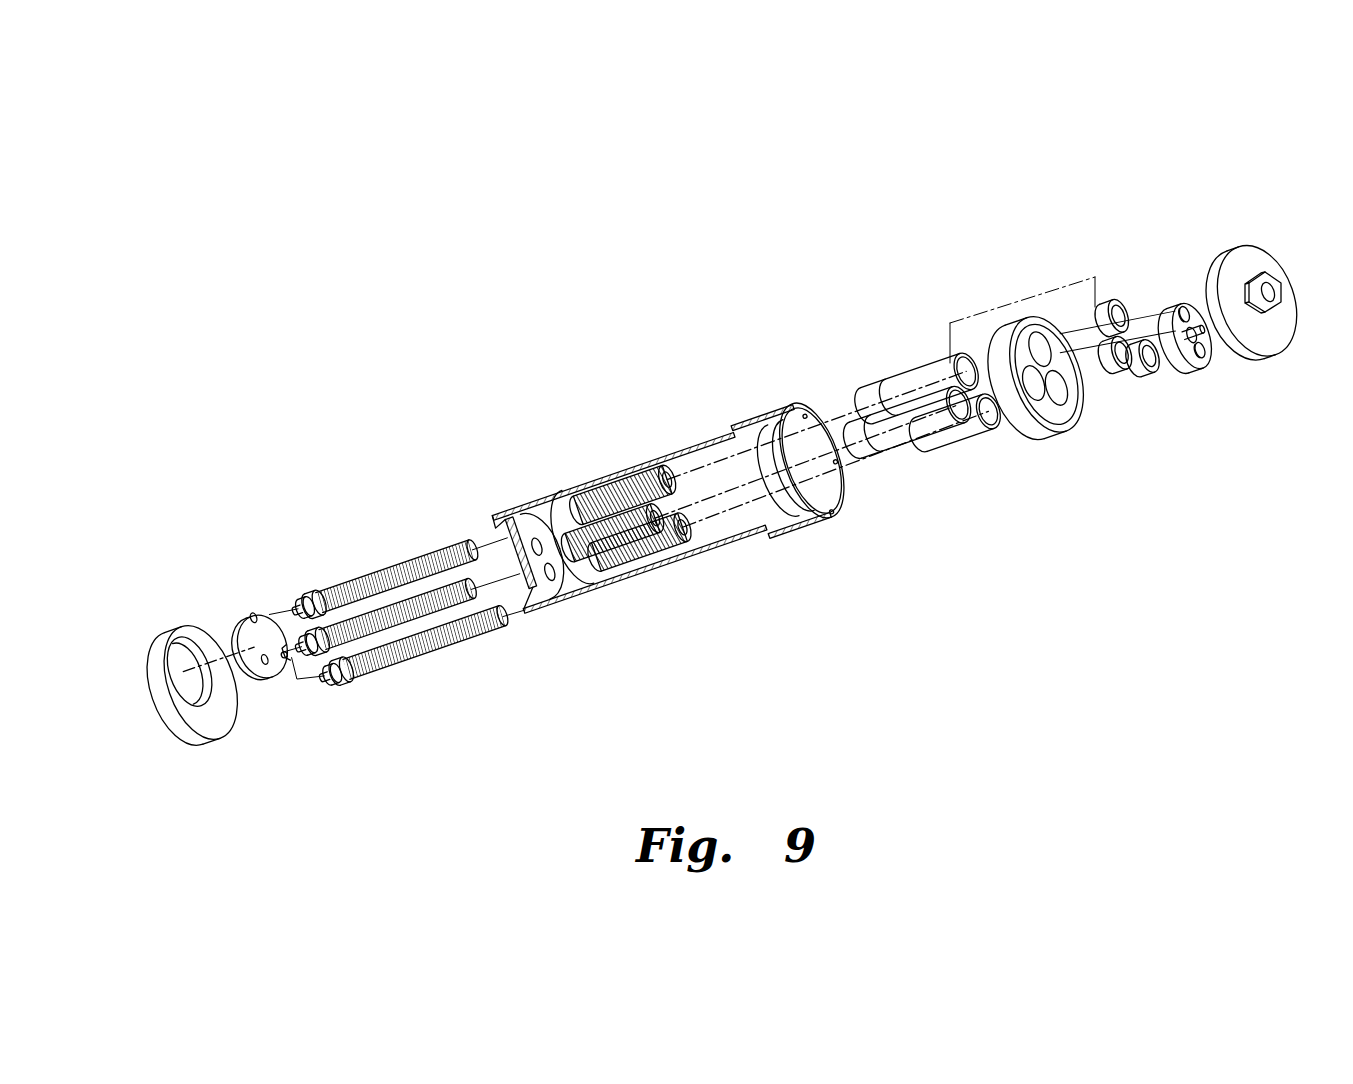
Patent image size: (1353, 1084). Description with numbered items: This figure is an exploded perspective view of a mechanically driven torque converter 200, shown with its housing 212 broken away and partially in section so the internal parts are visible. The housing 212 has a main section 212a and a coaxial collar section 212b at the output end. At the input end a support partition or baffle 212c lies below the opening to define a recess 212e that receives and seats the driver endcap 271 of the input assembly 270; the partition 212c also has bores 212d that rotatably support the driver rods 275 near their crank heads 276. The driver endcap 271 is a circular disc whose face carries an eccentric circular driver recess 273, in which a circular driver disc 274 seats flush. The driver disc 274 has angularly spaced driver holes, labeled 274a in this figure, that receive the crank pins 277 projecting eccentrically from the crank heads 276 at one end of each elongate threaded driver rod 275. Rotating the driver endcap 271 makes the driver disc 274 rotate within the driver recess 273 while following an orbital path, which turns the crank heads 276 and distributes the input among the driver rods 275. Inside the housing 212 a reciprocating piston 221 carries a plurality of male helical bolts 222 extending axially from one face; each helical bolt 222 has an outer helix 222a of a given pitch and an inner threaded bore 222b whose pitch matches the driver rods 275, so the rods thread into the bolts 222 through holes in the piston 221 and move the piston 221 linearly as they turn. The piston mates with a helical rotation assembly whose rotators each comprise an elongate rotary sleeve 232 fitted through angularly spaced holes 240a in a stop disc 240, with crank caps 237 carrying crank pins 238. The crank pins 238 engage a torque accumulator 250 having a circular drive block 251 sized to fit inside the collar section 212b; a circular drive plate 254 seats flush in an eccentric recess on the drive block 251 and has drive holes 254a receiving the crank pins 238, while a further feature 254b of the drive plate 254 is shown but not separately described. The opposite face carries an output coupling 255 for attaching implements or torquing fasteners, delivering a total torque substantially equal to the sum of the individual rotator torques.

The torque converter 200 is at (722, 295).
The housing 212 is at (664, 408).
The main section 212a is at (614, 470).
The collar section 212b is at (757, 398).
The support partition 212c is at (530, 503).
The bores 212d is at (570, 588).
The recess 212e is at (517, 600).
The reciprocating piston 221 is at (562, 513).
The male helical bolts 222 is at (680, 548).
The outer helix 222a is at (647, 568).
The inner threaded bore 222b is at (698, 527).
The rotary sleeve 232 is at (915, 370).
The crank caps 237 is at (1100, 300).
The crank pins 238 is at (1120, 385).
The stop disc 240 is at (1068, 437).
The holes 240a is at (1075, 397).
The torque accumulator 250 is at (1218, 218).
The drive block 251 is at (1276, 331).
The drive plate 254 is at (1185, 372).
The drive holes 254a is at (1212, 352).
The spacer disk pin 254b is at (1195, 323).
The output coupling 255 is at (1268, 265).
The input assembly 270 is at (205, 580).
The driver endcap 271 is at (190, 748).
The driver recess 273 is at (190, 648).
The driver disc 274 is at (260, 686).
The mounting disk hole 274a is at (262, 607).
The threaded driver rods 275 is at (414, 550).
The crank head 276 is at (320, 585).
The crank pin 277 is at (318, 588).